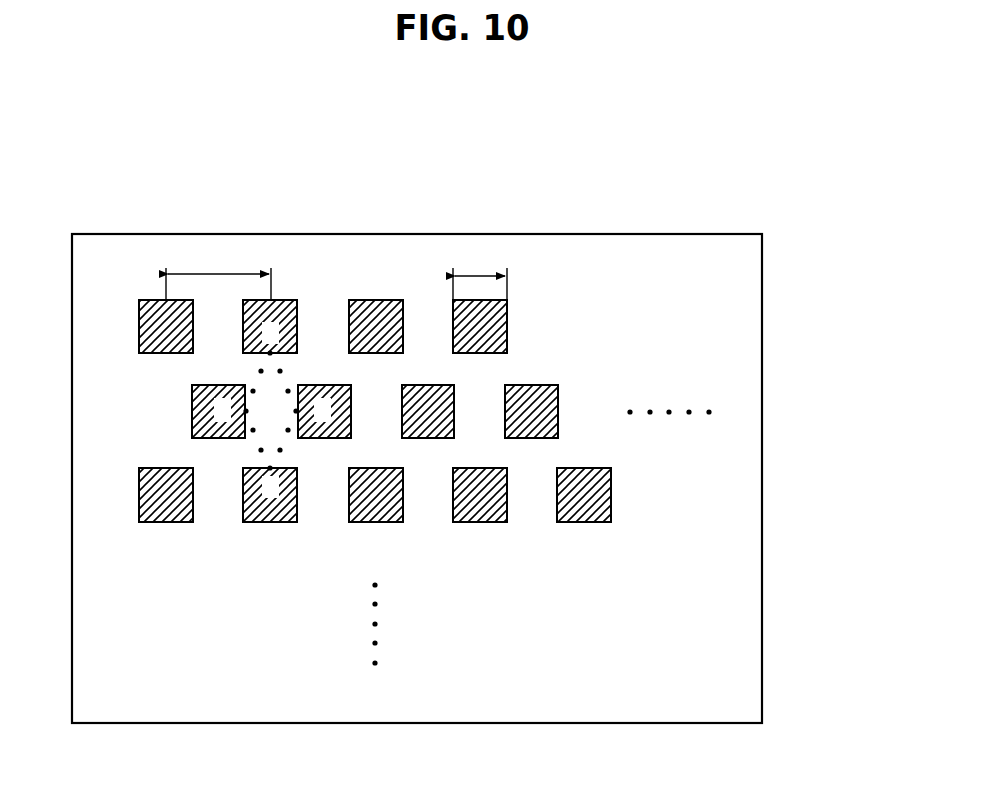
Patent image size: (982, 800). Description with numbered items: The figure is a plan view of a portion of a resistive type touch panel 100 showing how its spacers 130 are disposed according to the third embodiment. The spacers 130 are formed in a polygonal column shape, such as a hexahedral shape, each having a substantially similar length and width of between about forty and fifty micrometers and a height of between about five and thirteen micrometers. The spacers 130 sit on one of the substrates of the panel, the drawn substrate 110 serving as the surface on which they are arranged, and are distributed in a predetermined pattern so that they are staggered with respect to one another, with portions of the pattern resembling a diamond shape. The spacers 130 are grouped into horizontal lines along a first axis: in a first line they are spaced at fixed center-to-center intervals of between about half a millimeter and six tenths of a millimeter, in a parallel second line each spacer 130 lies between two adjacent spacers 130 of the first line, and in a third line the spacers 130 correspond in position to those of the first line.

The resistive type touch panel 100 is at (727, 176).
The substrate 110 is at (755, 318).
The spacers 130 is at (497, 326).